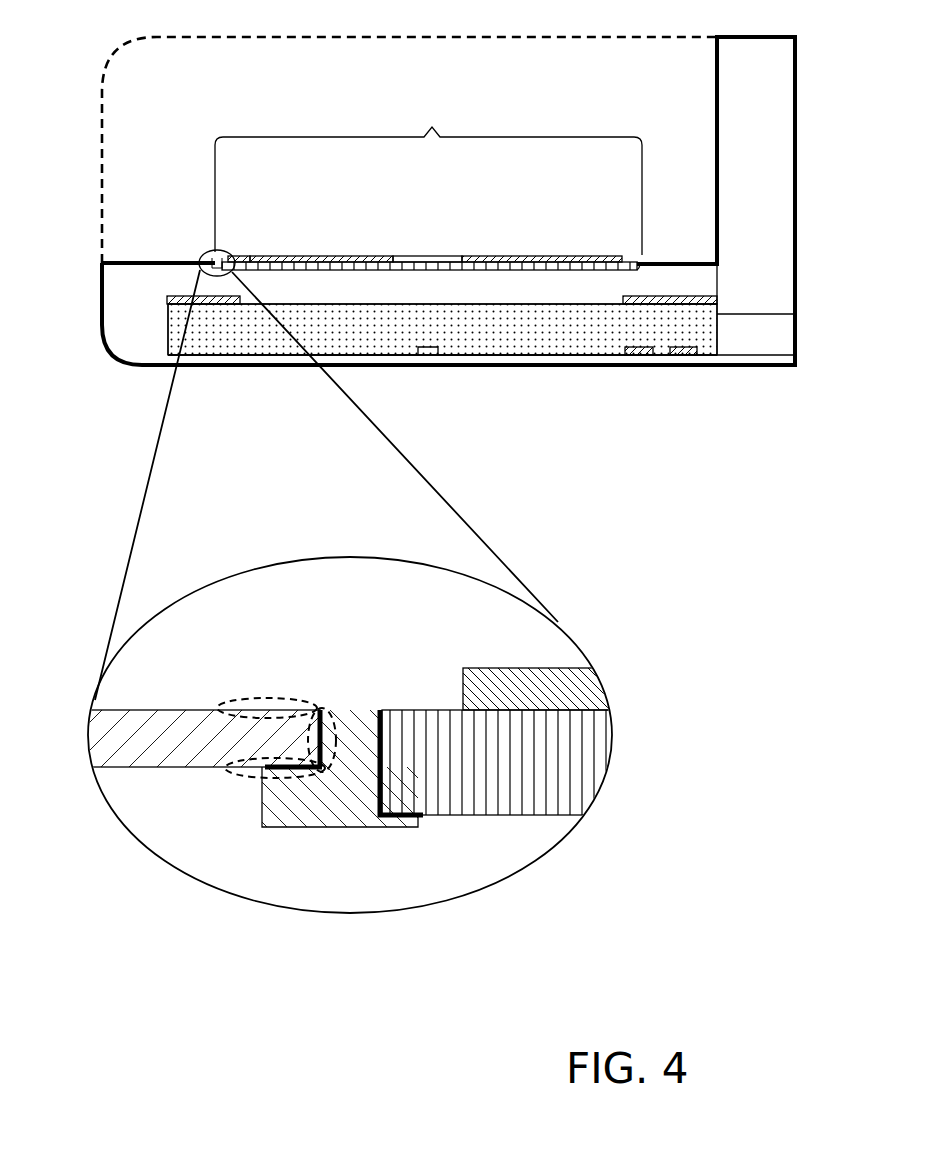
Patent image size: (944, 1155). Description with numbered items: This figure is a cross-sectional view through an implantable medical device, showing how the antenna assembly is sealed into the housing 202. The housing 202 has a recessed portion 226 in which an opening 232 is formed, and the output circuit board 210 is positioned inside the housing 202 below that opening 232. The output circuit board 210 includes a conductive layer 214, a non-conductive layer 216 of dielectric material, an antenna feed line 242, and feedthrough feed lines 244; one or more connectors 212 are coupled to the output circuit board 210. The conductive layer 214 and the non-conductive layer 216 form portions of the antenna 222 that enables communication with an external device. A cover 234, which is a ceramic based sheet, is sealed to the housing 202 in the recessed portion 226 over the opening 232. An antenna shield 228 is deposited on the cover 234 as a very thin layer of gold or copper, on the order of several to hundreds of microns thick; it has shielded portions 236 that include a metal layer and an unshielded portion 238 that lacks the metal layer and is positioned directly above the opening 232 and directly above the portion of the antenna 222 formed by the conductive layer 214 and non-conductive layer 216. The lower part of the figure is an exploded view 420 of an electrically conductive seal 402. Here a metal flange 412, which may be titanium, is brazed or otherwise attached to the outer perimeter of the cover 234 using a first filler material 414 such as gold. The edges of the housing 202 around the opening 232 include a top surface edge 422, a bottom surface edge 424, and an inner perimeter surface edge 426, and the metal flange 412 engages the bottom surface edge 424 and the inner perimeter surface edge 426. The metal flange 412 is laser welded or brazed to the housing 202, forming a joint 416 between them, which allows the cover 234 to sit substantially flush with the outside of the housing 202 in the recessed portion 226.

The housing 202 is at (740, 37).
The output circuit board 210 is at (598, 337).
The connectors 212 is at (780, 340).
The conductive layer 214 is at (188, 296).
The non-conductive layer 216 is at (348, 348).
The antenna 222 is at (503, 312).
The recessed portion 226 is at (124, 146).
The antenna shield 228 is at (242, 255).
The opening 232 is at (428, 177).
The cover 234 is at (512, 262).
The shielded portions 236 is at (320, 256).
The unshielded portion 238 is at (429, 258).
The antenna feed line 242 is at (430, 352).
The feedthrough feed lines 244 is at (683, 352).
The electrically conductive seal 402 is at (206, 255).
The metal flange 412 is at (313, 828).
The first filler material 414 is at (383, 822).
The joint 416 is at (295, 770).
The exploded view 420 is at (425, 903).
The top surface edge 422 is at (227, 706).
The bottom surface edge 424 is at (228, 776).
The inner perimeter surface edge 426 is at (334, 752).